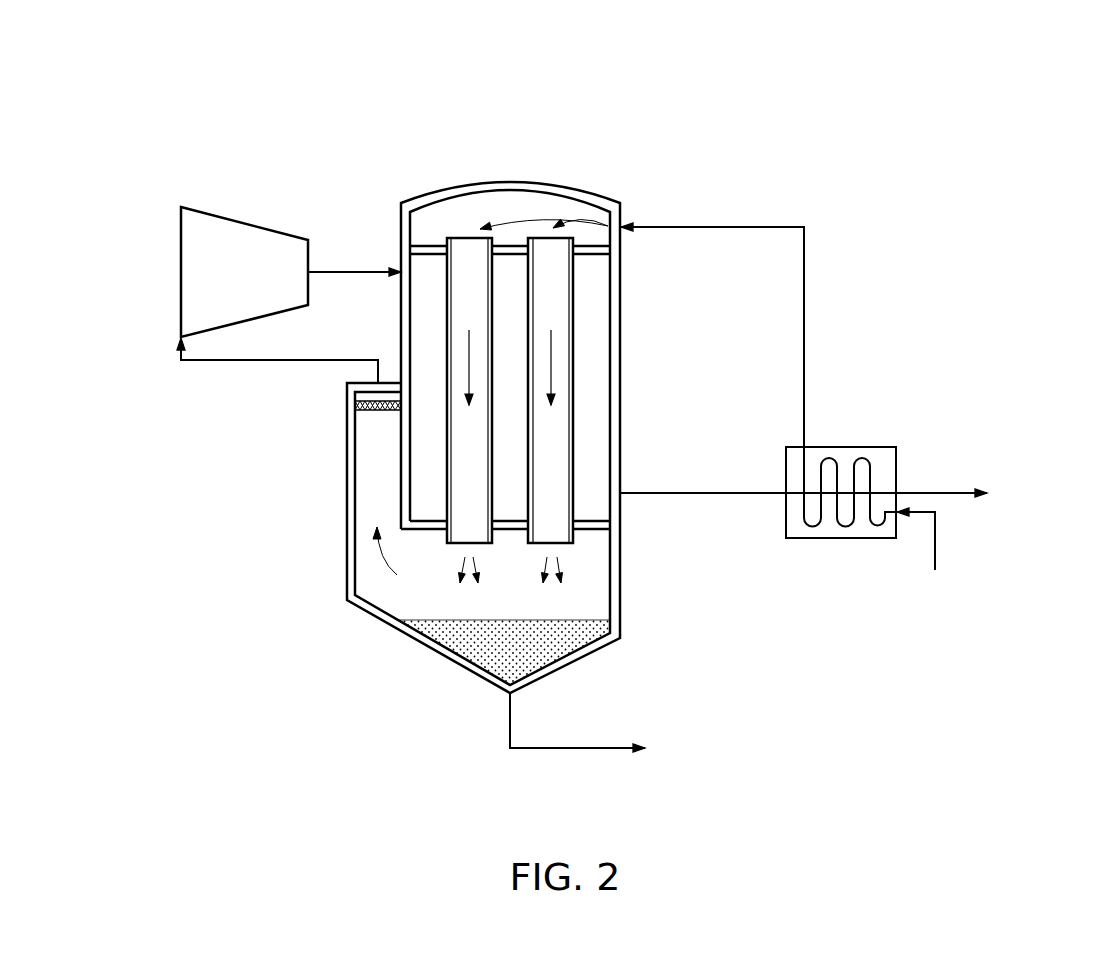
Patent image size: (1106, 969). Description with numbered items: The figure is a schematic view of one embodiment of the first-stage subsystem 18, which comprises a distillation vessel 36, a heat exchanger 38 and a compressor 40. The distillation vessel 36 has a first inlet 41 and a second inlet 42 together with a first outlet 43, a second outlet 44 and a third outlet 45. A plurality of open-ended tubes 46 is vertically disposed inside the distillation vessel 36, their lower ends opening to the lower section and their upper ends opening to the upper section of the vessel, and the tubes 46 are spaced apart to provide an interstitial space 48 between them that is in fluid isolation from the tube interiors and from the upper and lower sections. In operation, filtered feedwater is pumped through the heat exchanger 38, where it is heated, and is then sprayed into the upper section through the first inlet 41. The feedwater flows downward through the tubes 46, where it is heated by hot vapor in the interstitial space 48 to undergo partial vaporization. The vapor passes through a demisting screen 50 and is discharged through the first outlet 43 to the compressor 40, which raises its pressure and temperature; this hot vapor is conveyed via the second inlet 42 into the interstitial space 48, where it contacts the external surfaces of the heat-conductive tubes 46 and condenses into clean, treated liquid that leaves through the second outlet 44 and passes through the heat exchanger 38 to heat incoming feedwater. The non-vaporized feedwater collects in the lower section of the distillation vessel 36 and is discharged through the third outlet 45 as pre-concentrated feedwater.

The first-stage subsystem 18 is at (358, 138).
The distillation vessel 36 is at (573, 187).
The heat exchanger 38 is at (840, 445).
The compressor 40 is at (178, 270).
The first inlet 41 is at (622, 230).
The second inlet 42 is at (398, 268).
The first outlet 43 is at (360, 373).
The second outlet 44 is at (622, 495).
The third outlet 45 is at (508, 697).
The open-ended tubes 46 is at (446, 360).
The interstitial space 48 is at (419, 484).
The demisting screen 50 is at (373, 410).